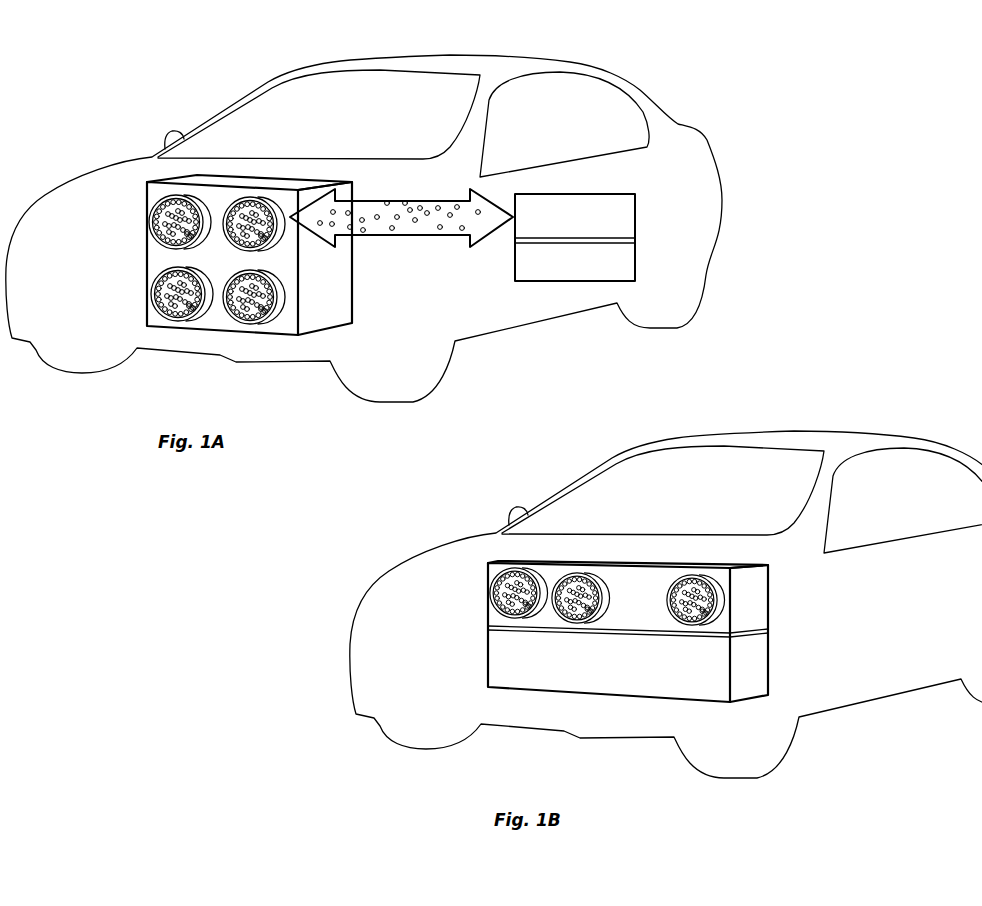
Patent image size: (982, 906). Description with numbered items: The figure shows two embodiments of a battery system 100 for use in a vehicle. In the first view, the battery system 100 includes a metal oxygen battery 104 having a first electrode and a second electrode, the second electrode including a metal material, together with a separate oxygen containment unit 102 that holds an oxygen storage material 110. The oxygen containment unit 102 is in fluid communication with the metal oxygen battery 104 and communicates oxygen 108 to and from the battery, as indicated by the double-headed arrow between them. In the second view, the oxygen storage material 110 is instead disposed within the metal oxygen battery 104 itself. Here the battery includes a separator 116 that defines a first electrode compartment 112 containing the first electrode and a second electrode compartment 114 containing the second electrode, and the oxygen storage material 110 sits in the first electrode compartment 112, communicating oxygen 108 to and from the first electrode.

In FIG. 1A, the battery system 100 is at (437, 90).
In FIG. 1B, the battery system 100 is at (777, 467).
In FIG. 1A, the oxygen containment unit 102 is at (333, 298).
In FIG. 1A, the metal oxygen battery 104 is at (570, 295).
In FIG. 1B, the metal oxygen battery 104 is at (820, 661).
In FIG. 1A, the oxygen 108 is at (396, 216).
In FIG. 1A, the oxygen storage material 110 is at (245, 217).
In FIG. 1B, the oxygen storage material 110 is at (552, 627).
In FIG. 1B, the first electrode compartment 112 is at (771, 598).
In FIG. 1B, the second electrode compartment 114 is at (771, 664).
In FIG. 1A, the separator 116 is at (636, 240).
In FIG. 1B, the separator 116 is at (771, 633).